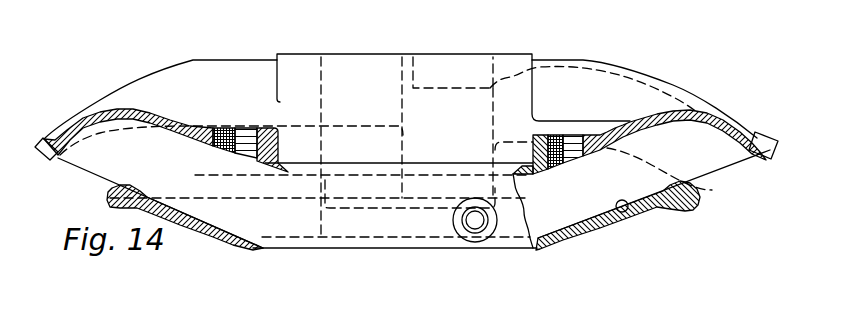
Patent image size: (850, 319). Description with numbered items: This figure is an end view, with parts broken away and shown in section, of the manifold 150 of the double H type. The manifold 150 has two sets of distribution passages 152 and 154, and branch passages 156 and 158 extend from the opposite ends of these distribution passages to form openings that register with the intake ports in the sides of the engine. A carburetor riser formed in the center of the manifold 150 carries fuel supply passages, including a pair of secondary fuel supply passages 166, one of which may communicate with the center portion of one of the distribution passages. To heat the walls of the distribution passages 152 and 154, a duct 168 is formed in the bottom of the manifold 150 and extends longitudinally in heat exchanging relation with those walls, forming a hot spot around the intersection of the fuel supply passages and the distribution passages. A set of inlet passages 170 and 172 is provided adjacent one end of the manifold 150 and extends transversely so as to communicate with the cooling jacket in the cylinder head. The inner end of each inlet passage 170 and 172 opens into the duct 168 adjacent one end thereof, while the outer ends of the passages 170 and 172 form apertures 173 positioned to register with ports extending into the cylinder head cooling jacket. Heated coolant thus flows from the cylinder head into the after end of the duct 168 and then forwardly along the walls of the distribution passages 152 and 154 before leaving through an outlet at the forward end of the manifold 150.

The manifold 150 is at (731, 112).
The distribution passage 152 is at (517, 190).
The distribution passage 154 is at (393, 198).
The branch passage 156 is at (710, 193).
The branch passage 158 is at (283, 167).
The secondary fuel supply passage 166 is at (323, 81).
The duct 168 is at (527, 218).
The inlet passage 170 is at (627, 212).
The inlet passage 172 is at (222, 228).
The aperture 173 is at (100, 191).